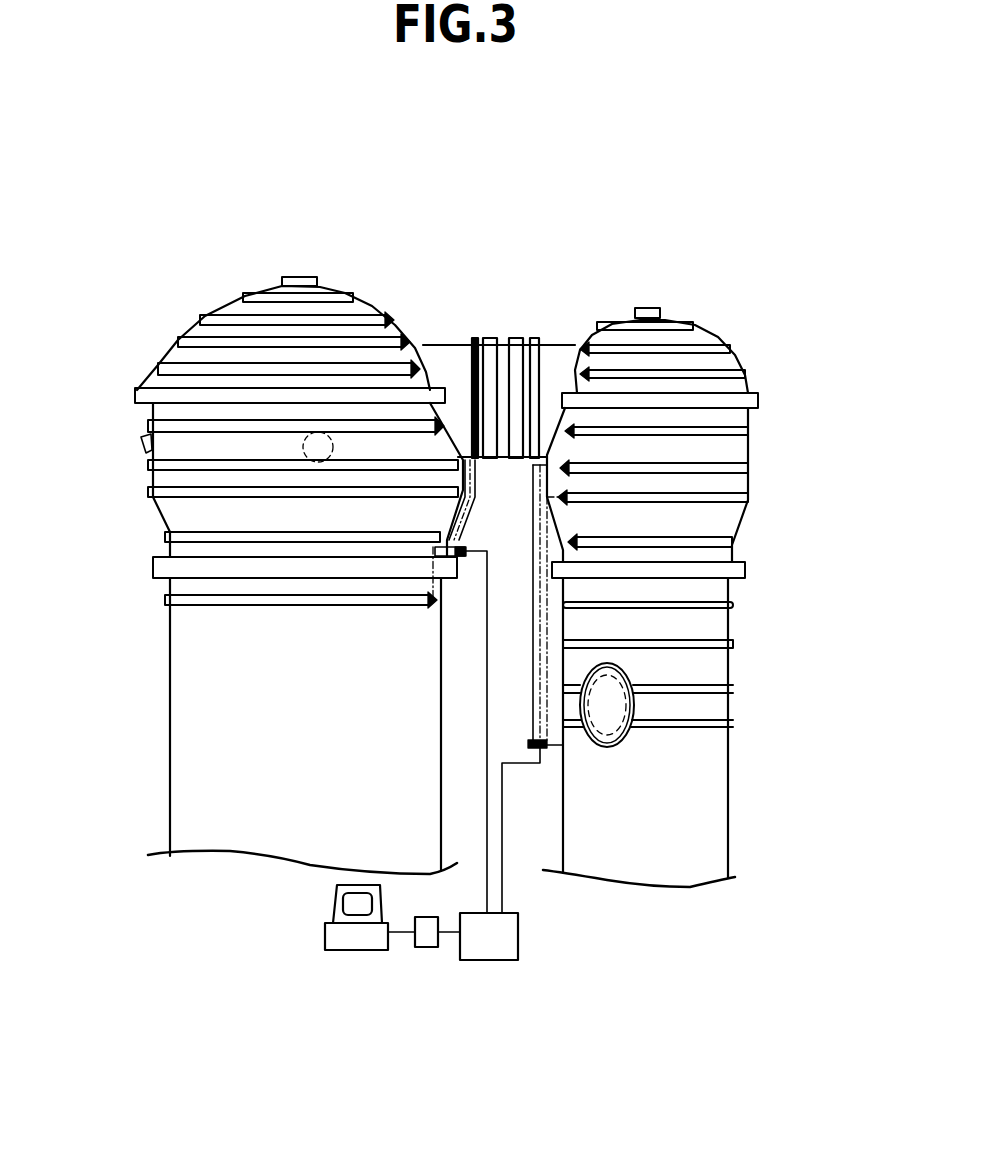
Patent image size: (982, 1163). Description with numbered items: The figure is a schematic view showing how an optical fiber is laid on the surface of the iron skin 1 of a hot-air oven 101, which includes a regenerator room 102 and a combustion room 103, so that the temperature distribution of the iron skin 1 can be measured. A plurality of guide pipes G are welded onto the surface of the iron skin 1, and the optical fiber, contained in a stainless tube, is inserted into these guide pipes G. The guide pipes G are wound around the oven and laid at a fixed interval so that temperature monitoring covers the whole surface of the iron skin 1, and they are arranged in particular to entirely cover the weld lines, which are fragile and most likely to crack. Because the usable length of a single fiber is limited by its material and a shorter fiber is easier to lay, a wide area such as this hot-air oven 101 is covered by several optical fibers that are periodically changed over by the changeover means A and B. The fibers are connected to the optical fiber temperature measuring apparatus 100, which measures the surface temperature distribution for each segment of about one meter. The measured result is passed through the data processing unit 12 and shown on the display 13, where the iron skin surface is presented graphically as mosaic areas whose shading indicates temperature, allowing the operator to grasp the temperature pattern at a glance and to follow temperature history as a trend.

The iron skin 1 is at (363, 308).
The guide pipes G is at (590, 335).
The changeover means A is at (463, 548).
The changeover means B is at (535, 740).
The optical fiber temperature measuring apparatus 100 is at (512, 945).
The data processing unit 12 is at (427, 938).
The display 13 is at (357, 943).
The hot-air oven 101 is at (766, 585).
The regenerator room 102 is at (160, 748).
The combustion room 103 is at (738, 807).